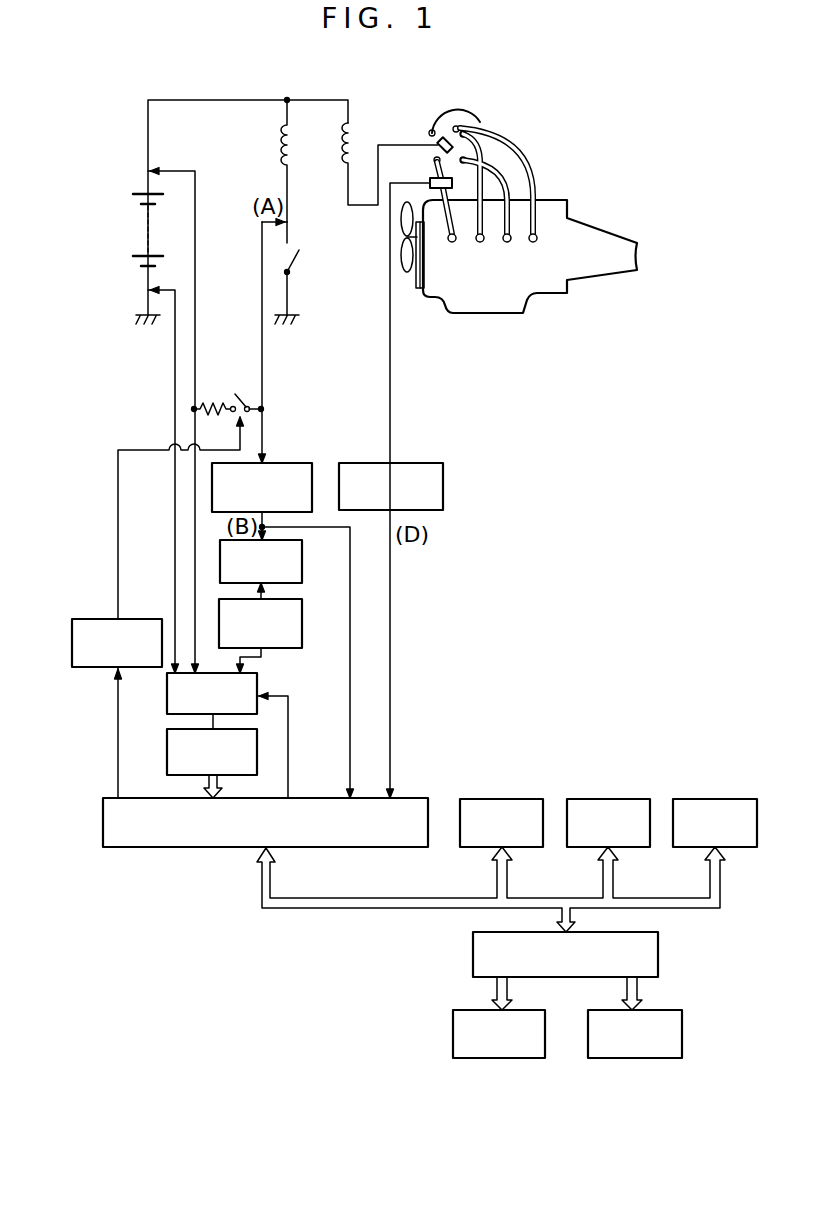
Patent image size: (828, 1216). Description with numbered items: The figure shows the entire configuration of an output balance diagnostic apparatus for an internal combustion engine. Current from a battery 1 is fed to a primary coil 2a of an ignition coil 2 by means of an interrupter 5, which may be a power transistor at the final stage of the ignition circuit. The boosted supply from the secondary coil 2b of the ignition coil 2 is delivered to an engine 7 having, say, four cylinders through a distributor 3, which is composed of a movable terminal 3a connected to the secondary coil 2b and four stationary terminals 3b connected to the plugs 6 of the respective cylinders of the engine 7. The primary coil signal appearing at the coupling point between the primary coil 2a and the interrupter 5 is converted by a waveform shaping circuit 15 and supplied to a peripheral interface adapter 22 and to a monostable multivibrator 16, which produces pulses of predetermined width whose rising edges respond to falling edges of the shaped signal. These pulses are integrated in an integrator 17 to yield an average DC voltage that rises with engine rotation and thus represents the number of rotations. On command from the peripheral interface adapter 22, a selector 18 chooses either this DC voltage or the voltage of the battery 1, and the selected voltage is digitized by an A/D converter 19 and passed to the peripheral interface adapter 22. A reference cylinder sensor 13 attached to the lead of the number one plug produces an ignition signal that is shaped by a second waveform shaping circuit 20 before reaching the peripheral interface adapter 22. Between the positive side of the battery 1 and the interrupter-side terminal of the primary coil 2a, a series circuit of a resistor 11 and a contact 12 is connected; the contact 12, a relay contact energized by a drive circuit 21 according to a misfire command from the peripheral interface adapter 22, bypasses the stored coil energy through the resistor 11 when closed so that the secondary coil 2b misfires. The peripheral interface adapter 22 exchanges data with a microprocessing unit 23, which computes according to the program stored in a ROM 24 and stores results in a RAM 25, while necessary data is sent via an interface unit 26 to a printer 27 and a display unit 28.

The battery 1 is at (132, 232).
The ignition coil 2 is at (337, 161).
The primary coil 2a is at (283, 148).
The secondary coil 2b is at (355, 142).
The distributor 3 is at (448, 118).
The movable terminal 3a is at (441, 132).
The stationary terminals 3b is at (470, 128).
The interrupter 5 is at (293, 260).
The plugs 6 is at (482, 245).
The engine 7 is at (570, 268).
The resistor 11 is at (209, 407).
The contact 12 is at (240, 397).
The reference cylinder sensor 13 is at (437, 200).
The waveform shaping circuit 15 is at (283, 463).
The monostable multivibrator 16 is at (302, 558).
The integrator 17 is at (303, 614).
The selector 18 is at (258, 677).
The A/D converter 19 is at (167, 753).
The waveform shaping circuit 20 is at (415, 463).
The drive circuit 21 is at (125, 619).
The peripheral interface adapter 22 is at (168, 848).
The microprocessing unit 23 is at (522, 799).
The ROM 24 is at (624, 799).
The RAM 25 is at (729, 799).
The interface unit 26 is at (660, 953).
The printer 27 is at (518, 1058).
The display unit 28 is at (653, 1058).